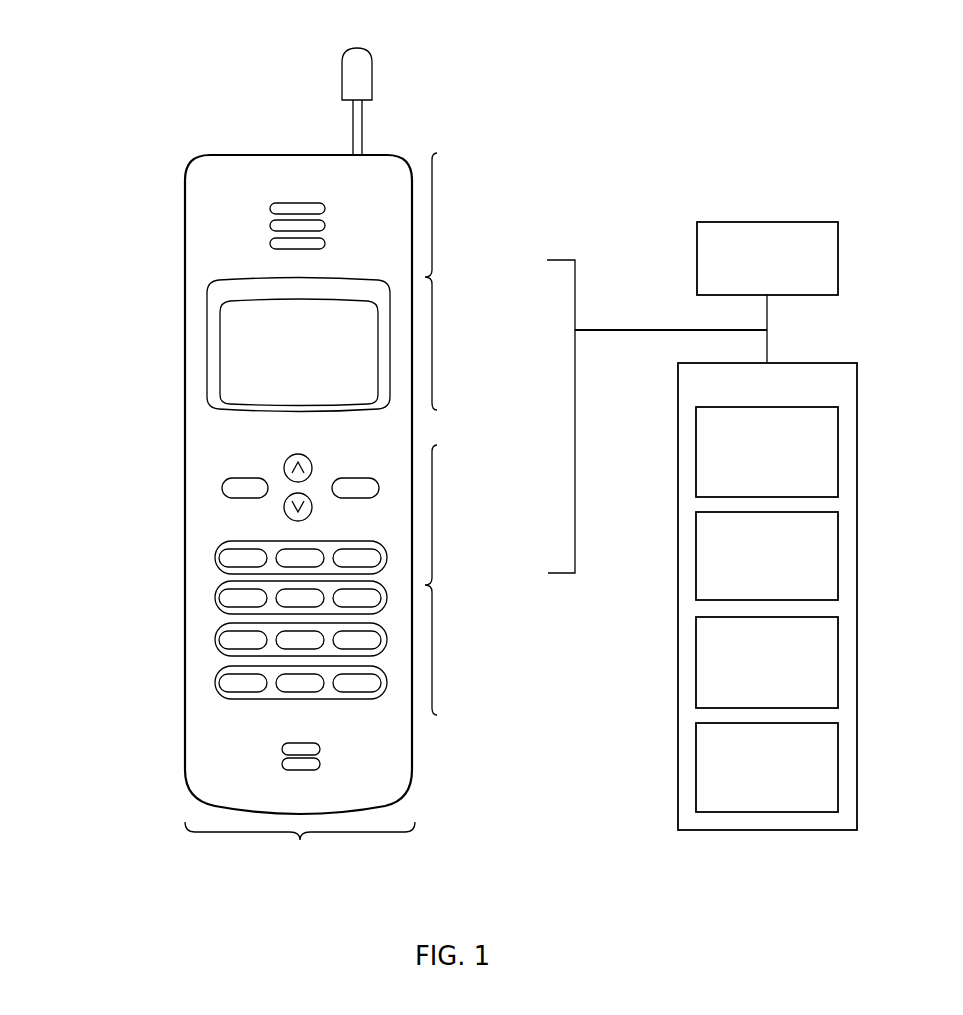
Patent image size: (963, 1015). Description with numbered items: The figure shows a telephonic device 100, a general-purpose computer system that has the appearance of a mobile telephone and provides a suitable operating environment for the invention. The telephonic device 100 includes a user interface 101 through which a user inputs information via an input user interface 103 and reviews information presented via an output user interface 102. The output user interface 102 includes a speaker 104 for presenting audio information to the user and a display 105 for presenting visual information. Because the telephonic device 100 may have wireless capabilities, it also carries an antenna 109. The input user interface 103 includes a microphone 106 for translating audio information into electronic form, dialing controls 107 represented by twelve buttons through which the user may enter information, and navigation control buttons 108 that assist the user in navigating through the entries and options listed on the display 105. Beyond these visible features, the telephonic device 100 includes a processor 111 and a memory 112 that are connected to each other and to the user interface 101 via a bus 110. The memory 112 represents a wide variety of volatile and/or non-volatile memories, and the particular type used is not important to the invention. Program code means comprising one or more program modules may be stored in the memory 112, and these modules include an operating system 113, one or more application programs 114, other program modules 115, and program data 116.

The telephonic device 100 is at (602, 126).
The user interface 101 is at (300, 855).
The output user interface 102 is at (500, 363).
The input user interface 103 is at (481, 580).
The speaker 104 is at (178, 225).
The display 105 is at (178, 358).
The microphone 106 is at (178, 755).
The dialing controls 107 is at (178, 698).
The navigation control buttons 108 is at (178, 482).
The antenna 109 is at (402, 113).
The bus 110 is at (613, 330).
The processor 111 is at (780, 283).
The memory 112 is at (820, 396).
The operating system 113 is at (781, 486).
The application programs 114 is at (781, 591).
The other program modules 115 is at (781, 696).
The program data 116 is at (781, 801).